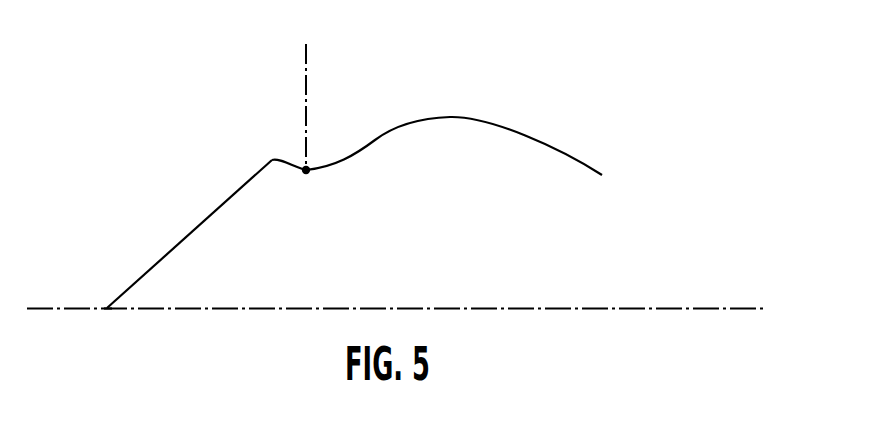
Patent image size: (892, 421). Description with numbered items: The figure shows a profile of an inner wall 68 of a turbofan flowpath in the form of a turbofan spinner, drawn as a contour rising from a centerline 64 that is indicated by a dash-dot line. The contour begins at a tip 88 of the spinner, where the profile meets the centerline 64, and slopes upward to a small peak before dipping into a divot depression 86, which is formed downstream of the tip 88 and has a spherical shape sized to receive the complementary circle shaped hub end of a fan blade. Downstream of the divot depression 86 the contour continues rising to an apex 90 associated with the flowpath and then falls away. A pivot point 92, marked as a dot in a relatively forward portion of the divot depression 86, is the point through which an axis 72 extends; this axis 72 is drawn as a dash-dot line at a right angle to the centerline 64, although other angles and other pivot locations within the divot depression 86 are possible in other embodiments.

The centerline 64 is at (708, 308).
The inner wall 68 is at (221, 204).
The axis 72 is at (306, 63).
The divot depression 86 is at (365, 88).
The tip 88 is at (118, 298).
The apex 90 is at (447, 117).
The pivot point 92 is at (303, 168).